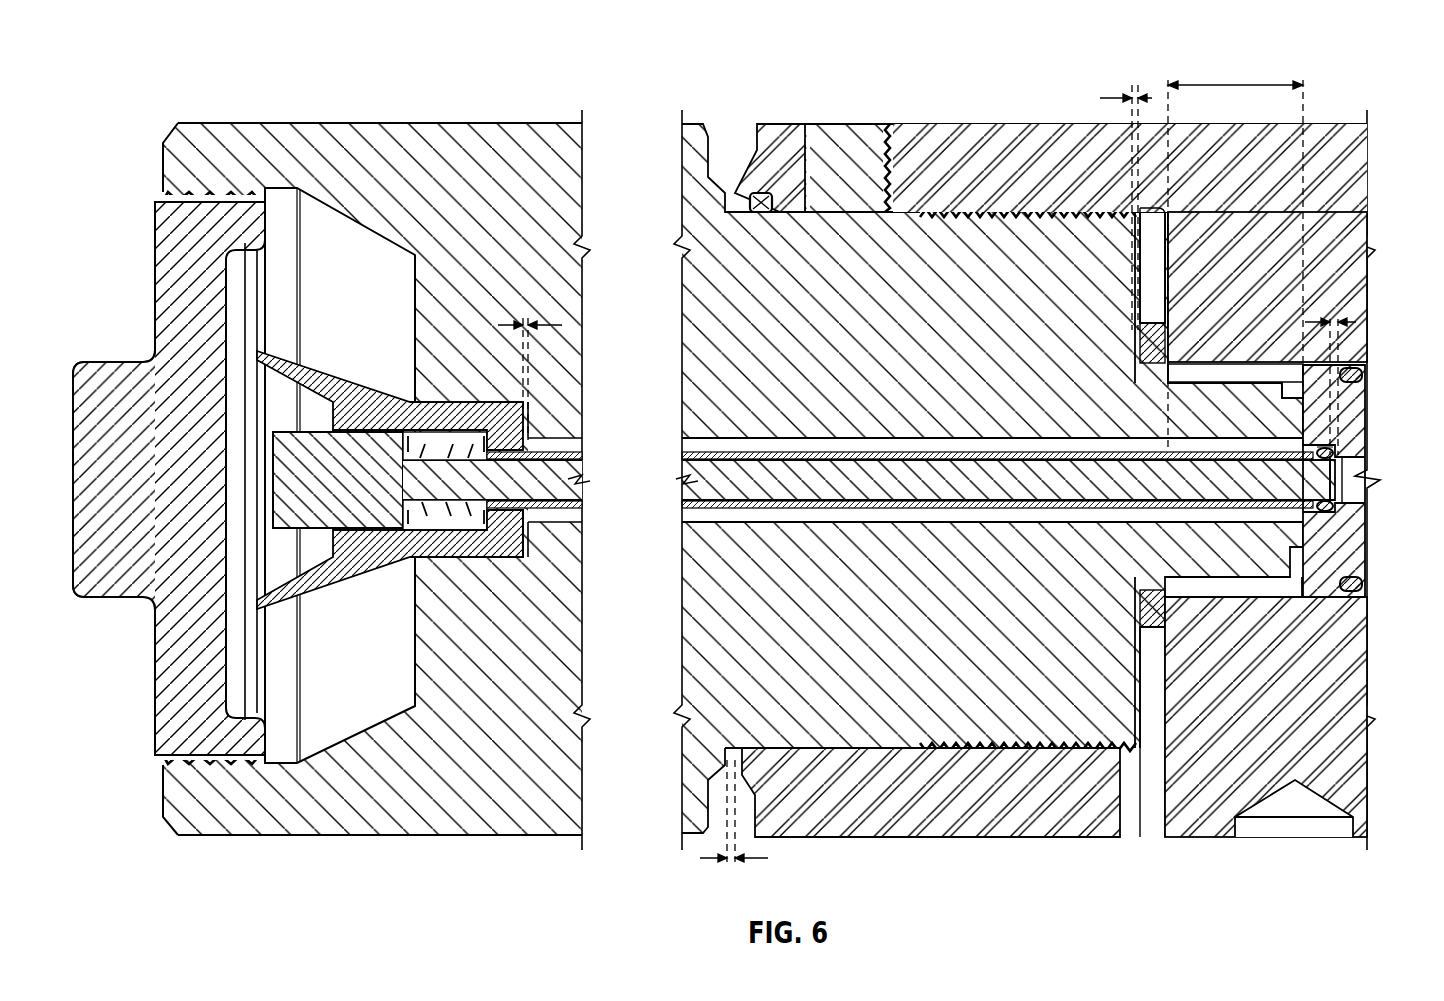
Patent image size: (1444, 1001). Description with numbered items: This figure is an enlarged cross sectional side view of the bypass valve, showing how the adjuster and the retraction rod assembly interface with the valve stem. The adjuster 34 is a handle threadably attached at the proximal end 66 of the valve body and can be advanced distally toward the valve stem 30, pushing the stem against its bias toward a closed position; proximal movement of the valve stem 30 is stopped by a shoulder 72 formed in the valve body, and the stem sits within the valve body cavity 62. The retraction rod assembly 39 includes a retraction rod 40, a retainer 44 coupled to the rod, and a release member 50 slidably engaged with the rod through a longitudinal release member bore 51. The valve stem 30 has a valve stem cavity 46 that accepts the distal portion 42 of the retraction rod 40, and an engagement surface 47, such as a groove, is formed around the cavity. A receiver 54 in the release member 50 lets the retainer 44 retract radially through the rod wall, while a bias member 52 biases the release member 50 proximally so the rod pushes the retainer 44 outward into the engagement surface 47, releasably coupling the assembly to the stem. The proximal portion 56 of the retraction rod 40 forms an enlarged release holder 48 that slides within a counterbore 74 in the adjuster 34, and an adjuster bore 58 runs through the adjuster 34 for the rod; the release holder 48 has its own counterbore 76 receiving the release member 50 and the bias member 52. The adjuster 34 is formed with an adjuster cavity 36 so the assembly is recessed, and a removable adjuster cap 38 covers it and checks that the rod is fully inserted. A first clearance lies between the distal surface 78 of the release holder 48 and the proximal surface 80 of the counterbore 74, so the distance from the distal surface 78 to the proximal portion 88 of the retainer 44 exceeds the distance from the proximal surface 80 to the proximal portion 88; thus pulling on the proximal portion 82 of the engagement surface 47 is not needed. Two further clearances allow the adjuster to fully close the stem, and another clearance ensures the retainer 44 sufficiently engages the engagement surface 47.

The valve stem 30 is at (1352, 420).
The adjuster 34 is at (335, 123).
The adjuster cavity 36 is at (345, 240).
The adjuster cap 38 is at (175, 258).
The retraction rod assembly 39 is at (318, 640).
The retraction rod 40 is at (738, 516).
The distal portion 42 is at (1340, 508).
The retainer 44 is at (1367, 476).
The valve stem cavity 46 is at (1368, 455).
The engagement surface 47 is at (1357, 585).
The release holder 48 is at (372, 530).
The release member 50 is at (226, 590).
The release member bore 51 is at (682, 460).
The bias member 52 is at (453, 445).
The receiver 54 is at (1315, 460).
The proximal portion 56 is at (262, 398).
The adjuster bore 58 is at (745, 510).
The valve body cavity 62 is at (1243, 593).
The proximal end 66 is at (165, 160).
The shoulder 72 is at (1170, 596).
The counterbore 74 is at (528, 558).
The counterbore 76 is at (360, 535).
The distal surface 78 is at (533, 430).
The proximal surface 80 is at (530, 405).
The proximal portion 82 is at (1305, 527).
The proximal portion 88 is at (1285, 436).